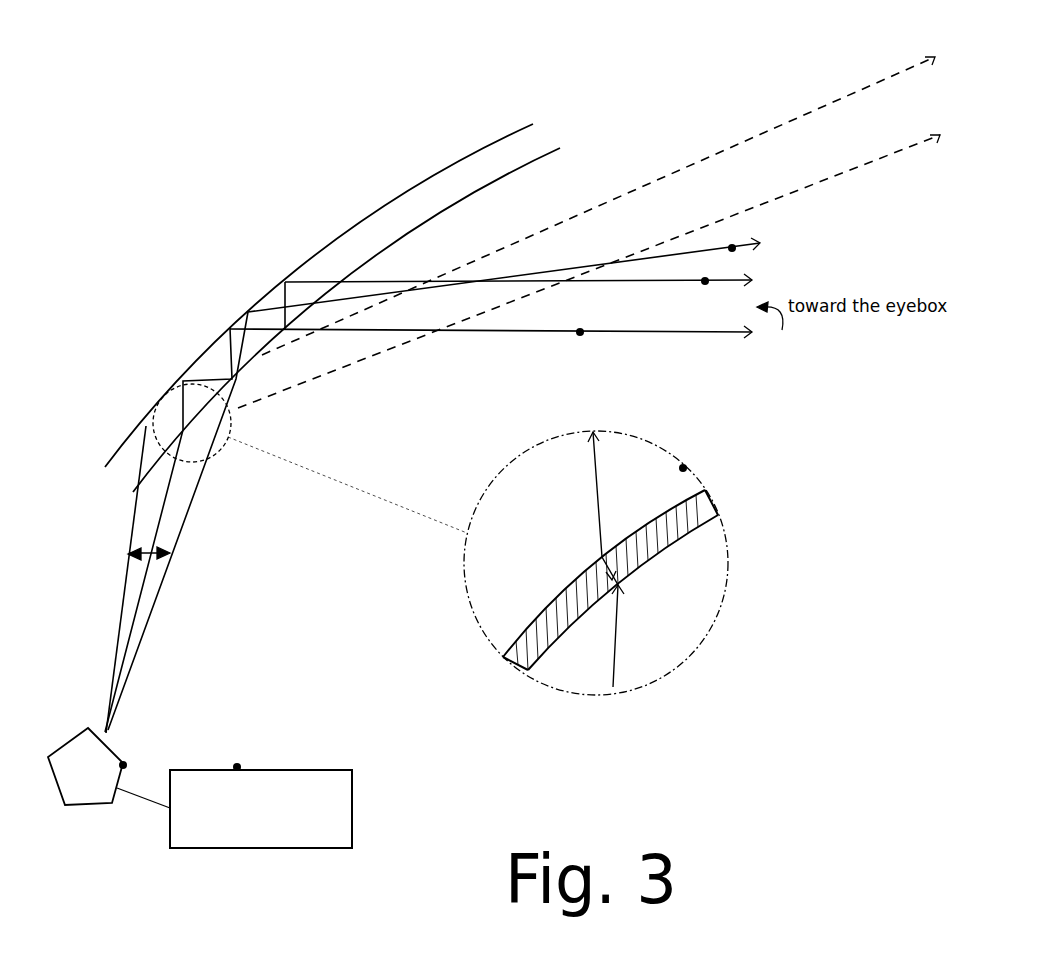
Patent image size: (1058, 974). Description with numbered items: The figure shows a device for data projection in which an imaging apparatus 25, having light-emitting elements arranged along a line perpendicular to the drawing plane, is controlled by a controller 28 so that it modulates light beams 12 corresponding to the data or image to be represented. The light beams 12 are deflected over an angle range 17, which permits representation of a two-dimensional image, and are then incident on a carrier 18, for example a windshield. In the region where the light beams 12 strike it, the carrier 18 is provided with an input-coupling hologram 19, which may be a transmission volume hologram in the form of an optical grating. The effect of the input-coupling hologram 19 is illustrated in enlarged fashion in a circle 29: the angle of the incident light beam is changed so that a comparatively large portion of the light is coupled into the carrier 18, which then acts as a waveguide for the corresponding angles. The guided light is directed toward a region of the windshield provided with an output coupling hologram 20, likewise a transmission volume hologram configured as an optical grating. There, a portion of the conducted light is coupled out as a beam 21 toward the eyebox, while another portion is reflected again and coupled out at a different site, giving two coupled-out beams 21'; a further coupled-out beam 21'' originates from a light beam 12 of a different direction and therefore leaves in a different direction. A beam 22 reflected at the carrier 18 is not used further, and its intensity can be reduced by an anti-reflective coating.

The light beams 12 is at (157, 594).
The angle range 17 is at (131, 547).
The carrier 18 is at (120, 447).
The input-coupling hologram 19 is at (140, 477).
The output coupling hologram 20 is at (401, 241).
The coupled-out beam 21 is at (520, 343).
The coupled-out beams 21' is at (563, 314).
The coupled-out beam 21'' is at (548, 251).
The reflected beam 22 is at (672, 172).
The imaging apparatus 25 is at (123, 765).
The controller 28 is at (237, 767).
The circle 29 is at (683, 468).